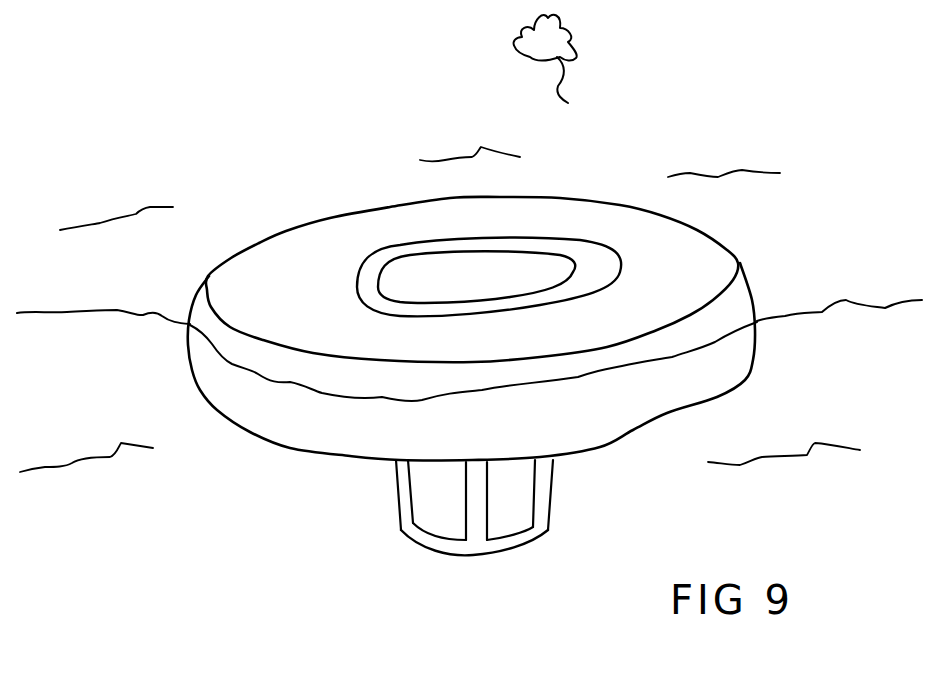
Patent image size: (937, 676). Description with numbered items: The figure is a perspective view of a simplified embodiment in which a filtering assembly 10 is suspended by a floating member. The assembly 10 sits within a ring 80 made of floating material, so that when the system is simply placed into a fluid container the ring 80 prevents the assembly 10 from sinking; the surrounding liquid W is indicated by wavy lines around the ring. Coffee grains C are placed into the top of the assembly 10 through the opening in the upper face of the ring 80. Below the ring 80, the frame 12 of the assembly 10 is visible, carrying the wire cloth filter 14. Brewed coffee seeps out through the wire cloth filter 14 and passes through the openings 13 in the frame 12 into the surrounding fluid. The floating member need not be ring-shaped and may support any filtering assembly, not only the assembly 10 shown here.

The assembly 10 is at (571, 487).
The frame 12 is at (370, 284).
The openings 13 is at (508, 518).
The wire cloth filter 14 is at (427, 506).
The ring 80 is at (276, 405).
The coffee grains C is at (467, 286).
The water W is at (830, 307).